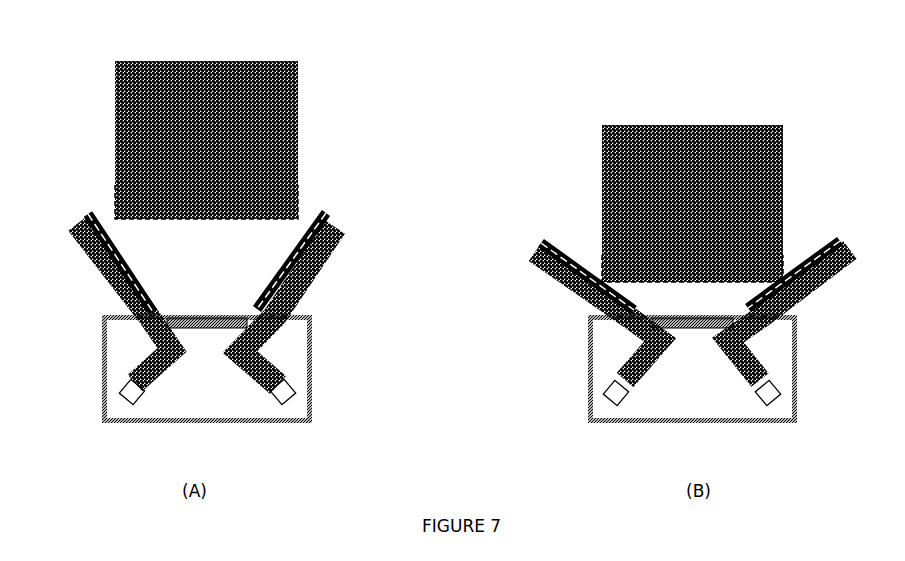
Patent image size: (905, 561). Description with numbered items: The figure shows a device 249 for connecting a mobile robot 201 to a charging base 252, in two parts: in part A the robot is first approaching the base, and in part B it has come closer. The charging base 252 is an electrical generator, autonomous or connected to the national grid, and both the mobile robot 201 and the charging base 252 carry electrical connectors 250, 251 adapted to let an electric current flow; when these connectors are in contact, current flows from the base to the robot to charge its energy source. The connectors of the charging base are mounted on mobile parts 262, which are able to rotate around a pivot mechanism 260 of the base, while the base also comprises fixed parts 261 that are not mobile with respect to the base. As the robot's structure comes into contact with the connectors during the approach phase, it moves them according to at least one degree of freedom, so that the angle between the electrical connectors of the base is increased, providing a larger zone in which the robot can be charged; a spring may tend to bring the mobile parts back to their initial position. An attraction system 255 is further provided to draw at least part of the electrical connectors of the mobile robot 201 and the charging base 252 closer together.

The mobile robot 201 is at (302, 88).
The device for connecting the mobile robot to the charging base 249 is at (82, 203).
The electrical connector 250 is at (328, 212).
The electrical connector 251 is at (298, 200).
The attraction system 255 is at (332, 212).
The pivot mechanism 260 is at (642, 333).
The fixed parts 261 is at (610, 425).
The mobile parts 262 is at (110, 283).
The charging base 252 is at (317, 398).